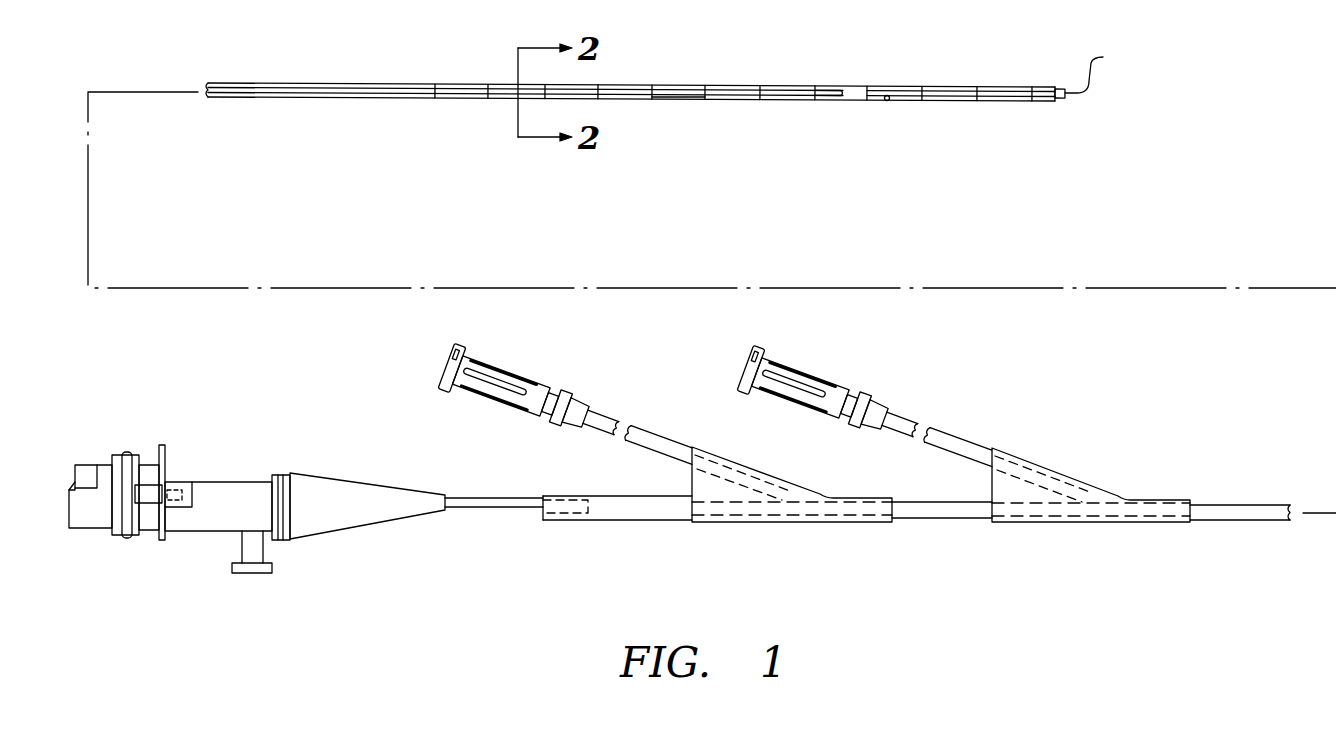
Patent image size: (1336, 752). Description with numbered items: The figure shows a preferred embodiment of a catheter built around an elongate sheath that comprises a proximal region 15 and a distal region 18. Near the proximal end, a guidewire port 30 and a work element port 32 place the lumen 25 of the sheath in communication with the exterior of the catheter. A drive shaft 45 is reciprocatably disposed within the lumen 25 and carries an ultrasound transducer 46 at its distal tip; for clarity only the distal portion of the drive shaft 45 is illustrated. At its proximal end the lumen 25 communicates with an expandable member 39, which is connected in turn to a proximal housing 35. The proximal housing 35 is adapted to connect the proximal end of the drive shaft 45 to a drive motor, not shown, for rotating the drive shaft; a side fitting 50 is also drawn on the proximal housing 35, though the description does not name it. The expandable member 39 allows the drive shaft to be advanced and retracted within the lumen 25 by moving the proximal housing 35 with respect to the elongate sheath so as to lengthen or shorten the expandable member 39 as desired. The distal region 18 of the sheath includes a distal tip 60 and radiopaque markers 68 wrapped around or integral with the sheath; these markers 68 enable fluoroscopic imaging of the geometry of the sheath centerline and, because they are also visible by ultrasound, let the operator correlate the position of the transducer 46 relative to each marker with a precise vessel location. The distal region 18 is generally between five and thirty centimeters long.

The proximal region 15 is at (1010, 534).
The distal region 18 is at (671, 121).
The lumen 25 is at (888, 101).
The guidewire port 30 is at (744, 372).
The work element port 32 is at (446, 371).
The proximal housing 35 is at (305, 473).
The expandable member 39 is at (543, 512).
The drive shaft 45 is at (677, 99).
The ultrasound transducer 46 is at (838, 101).
The side port 50 is at (256, 575).
The distal tip 60 is at (1101, 66).
The radiopaque markers 68 is at (437, 85).